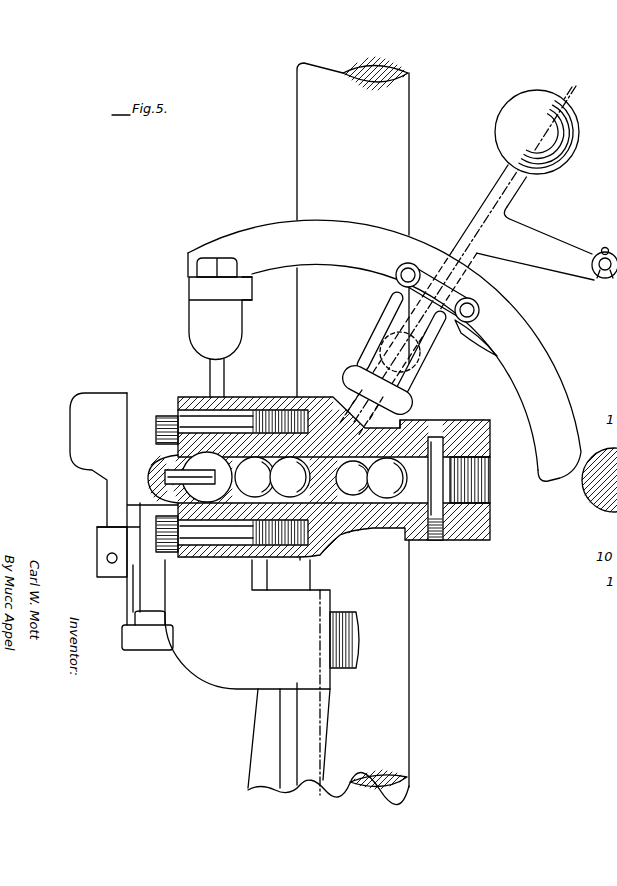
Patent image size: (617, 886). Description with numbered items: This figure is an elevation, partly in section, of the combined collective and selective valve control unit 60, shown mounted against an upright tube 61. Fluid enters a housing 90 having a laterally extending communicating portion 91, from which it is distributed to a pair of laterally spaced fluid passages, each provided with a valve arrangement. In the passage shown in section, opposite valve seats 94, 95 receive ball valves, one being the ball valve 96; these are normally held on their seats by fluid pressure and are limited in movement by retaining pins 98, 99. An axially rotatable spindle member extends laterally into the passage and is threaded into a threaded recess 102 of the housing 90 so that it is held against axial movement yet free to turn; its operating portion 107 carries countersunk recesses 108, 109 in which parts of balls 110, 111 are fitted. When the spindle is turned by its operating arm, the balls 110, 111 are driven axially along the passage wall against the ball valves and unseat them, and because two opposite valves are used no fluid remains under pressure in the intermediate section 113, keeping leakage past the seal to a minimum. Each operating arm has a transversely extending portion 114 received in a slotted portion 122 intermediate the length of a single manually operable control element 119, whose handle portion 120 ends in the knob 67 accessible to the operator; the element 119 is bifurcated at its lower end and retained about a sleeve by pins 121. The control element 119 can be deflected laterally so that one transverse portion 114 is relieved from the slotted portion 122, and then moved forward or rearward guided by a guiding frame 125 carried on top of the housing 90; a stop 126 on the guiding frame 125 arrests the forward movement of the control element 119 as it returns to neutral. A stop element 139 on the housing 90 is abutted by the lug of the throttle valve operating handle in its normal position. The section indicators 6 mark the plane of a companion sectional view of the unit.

The section line 6- 6 is at (599, 82).
The combined collective and selective unit 60 is at (165, 325).
The tube 61 is at (300, 146).
The knob 67 is at (579, 162).
The housing 90 is at (213, 663).
The laterally extending communicating portion 91 is at (430, 424).
The valve seat 94 is at (260, 505).
The valve seat 95 is at (405, 548).
The ball valve 96 is at (240, 500).
The retaining pin 98 is at (167, 416).
The retaining pin 99 is at (468, 428).
The threaded recess 102 is at (612, 518).
The operating portion 107 is at (372, 532).
The countersunk recess 108 is at (290, 397).
The countersunk recess 109 is at (352, 497).
The ball 110 is at (283, 406).
The ball 111 is at (412, 418).
The intermediate section 113 is at (375, 532).
The transversely extending portion 114 is at (400, 328).
The manually operable control element 119 is at (490, 188).
The handle portion 120 is at (578, 138).
The pin 121 is at (479, 322).
The slotted portion 122 is at (402, 322).
The guiding frame 125 is at (550, 362).
The stop 126 is at (497, 358).
The stop element 139 is at (76, 423).